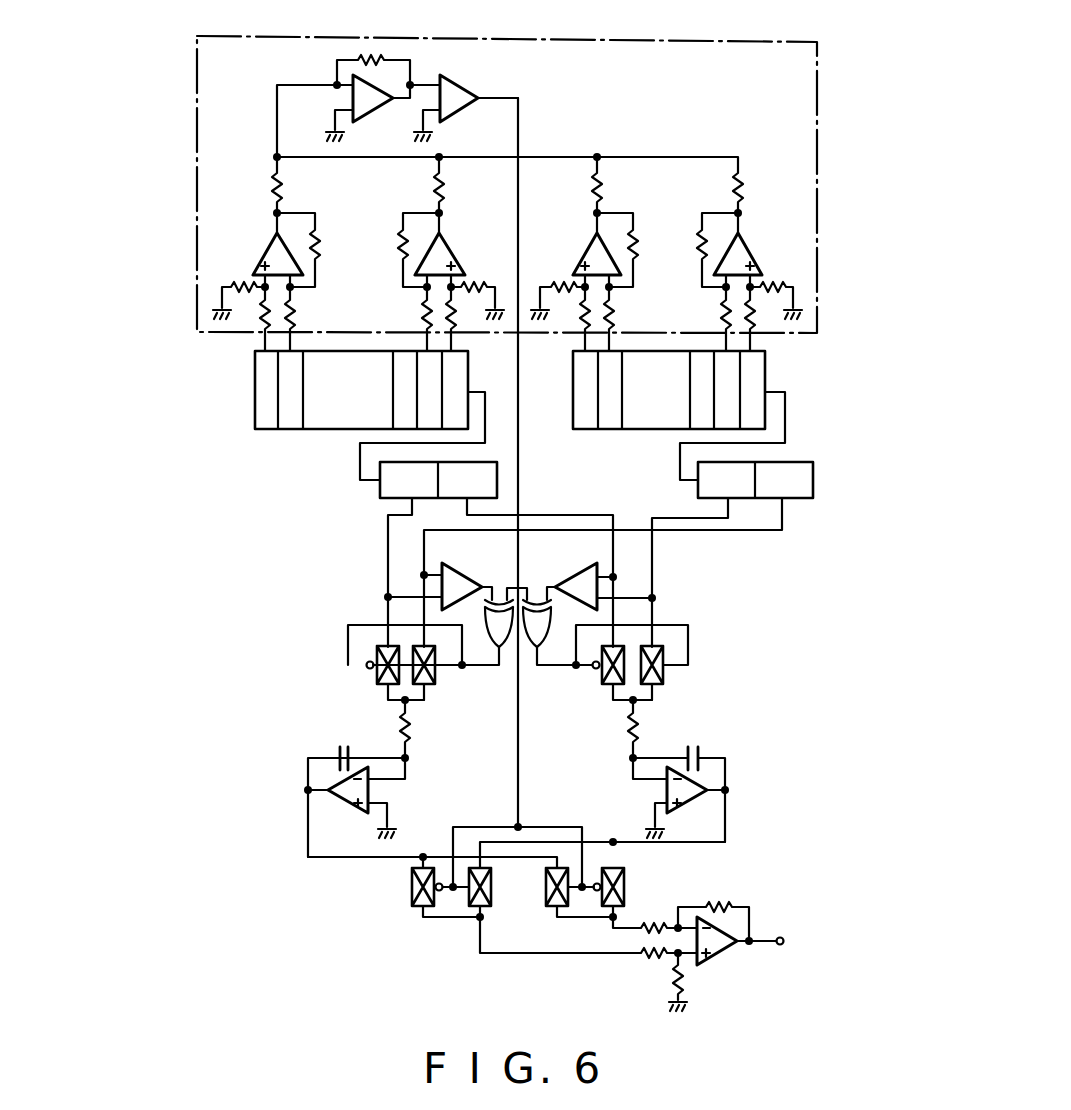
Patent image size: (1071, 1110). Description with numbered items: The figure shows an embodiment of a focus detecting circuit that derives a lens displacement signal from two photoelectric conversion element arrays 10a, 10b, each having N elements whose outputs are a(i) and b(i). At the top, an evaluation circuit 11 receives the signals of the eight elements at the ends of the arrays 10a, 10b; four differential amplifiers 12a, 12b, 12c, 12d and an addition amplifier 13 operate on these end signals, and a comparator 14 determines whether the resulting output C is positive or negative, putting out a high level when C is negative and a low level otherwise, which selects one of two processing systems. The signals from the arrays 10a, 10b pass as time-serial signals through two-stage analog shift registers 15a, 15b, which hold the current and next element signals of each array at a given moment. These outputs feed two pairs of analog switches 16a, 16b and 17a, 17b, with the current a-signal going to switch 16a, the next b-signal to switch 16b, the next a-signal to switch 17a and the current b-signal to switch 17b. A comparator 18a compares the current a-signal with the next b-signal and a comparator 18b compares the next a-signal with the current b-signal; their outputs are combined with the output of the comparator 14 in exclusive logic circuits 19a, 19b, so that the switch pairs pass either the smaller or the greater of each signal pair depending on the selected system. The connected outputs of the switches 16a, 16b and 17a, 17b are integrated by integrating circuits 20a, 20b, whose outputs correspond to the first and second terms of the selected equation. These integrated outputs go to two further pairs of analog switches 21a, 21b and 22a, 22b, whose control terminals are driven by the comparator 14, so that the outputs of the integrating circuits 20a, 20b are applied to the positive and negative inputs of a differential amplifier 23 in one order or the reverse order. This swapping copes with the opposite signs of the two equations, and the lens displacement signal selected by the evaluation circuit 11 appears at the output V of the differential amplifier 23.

The evaluation circuit 11 is at (625, 41).
The addition amplifier 13 is at (383, 106).
The comparator 14 is at (468, 82).
The differential amplifier 12a is at (452, 244).
The differential amplifier 12b is at (270, 246).
The differential amplifier 12c is at (755, 244).
The differential amplifier 12d is at (584, 246).
The photoelectric conversion element array 10a is at (316, 429).
The photoelectric conversion element array 10b is at (634, 429).
The two-stage analog shift register 15a is at (382, 500).
The two-stage analog shift register 15b is at (806, 499).
The analog switch 16a is at (378, 680).
The analog switch 16b is at (436, 672).
The analog switch 17a is at (602, 680).
The analog switch 17b is at (664, 675).
The comparator 18a is at (485, 562).
The comparator 18b is at (576, 578).
The exclusive logic circuit 19a is at (500, 660).
The exclusive logic circuit 19b is at (534, 660).
The integrating circuit 20a is at (346, 804).
The integrating circuit 20b is at (694, 795).
The analog switch 21a is at (412, 888).
The analog switch 21b is at (470, 898).
The analog switch 22a is at (548, 888).
The analog switch 22b is at (626, 883).
The differential amplifier 23 is at (722, 954).